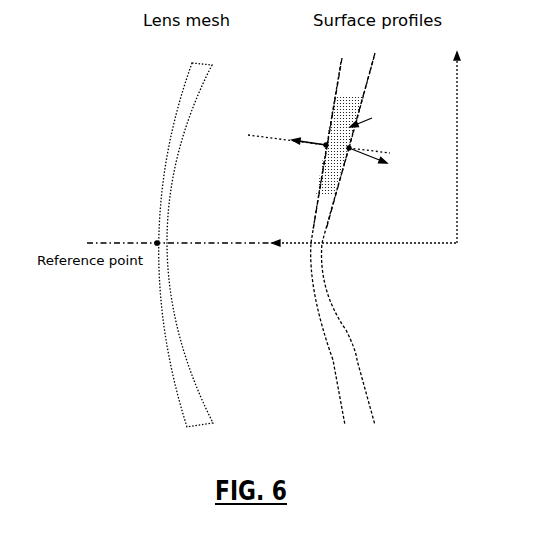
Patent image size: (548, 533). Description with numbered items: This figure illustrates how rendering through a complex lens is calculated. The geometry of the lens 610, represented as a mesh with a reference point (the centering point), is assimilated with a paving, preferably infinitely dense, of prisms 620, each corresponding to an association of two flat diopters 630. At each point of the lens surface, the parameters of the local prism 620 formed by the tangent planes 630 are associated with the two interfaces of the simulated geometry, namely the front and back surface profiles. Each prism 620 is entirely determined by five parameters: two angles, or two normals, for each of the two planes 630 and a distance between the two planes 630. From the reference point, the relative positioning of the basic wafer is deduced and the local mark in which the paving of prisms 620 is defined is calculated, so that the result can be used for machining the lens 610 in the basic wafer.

The lens 610 is at (325, 338).
The prism 620 is at (343, 135).
The flat diopters 630 is at (333, 110).